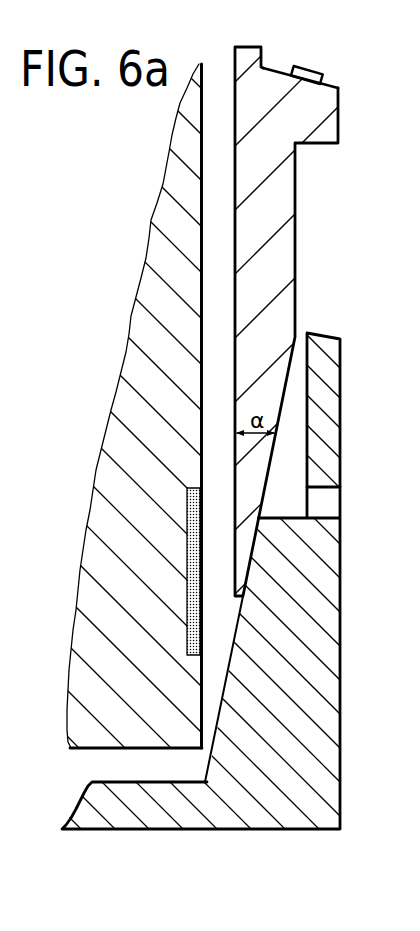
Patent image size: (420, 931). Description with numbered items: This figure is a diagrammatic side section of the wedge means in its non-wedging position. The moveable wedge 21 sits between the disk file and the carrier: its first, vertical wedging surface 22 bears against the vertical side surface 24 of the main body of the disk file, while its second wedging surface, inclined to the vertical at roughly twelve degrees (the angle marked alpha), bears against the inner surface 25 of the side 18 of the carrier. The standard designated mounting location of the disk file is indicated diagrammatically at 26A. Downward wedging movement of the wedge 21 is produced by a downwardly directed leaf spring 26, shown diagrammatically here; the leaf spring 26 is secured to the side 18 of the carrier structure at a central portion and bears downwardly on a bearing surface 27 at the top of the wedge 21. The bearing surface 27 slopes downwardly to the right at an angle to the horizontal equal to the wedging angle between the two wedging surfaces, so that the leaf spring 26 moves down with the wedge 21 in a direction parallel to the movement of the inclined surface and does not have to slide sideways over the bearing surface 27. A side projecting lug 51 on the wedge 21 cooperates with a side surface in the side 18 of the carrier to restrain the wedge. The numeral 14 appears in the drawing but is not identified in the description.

The housing wall 14 is at (110, 393).
The side of the carrier 18 is at (342, 570).
The wedge 21 is at (285, 390).
The first wedging surface 22 is at (235, 302).
The vertical side surface 24 is at (203, 215).
The inner surface 25 is at (238, 633).
The leaf spring 26 is at (322, 71).
The standard designated mounting location 26A is at (202, 650).
The bearing surface 27 is at (338, 88).
The side projecting lug 51 is at (9, 213).